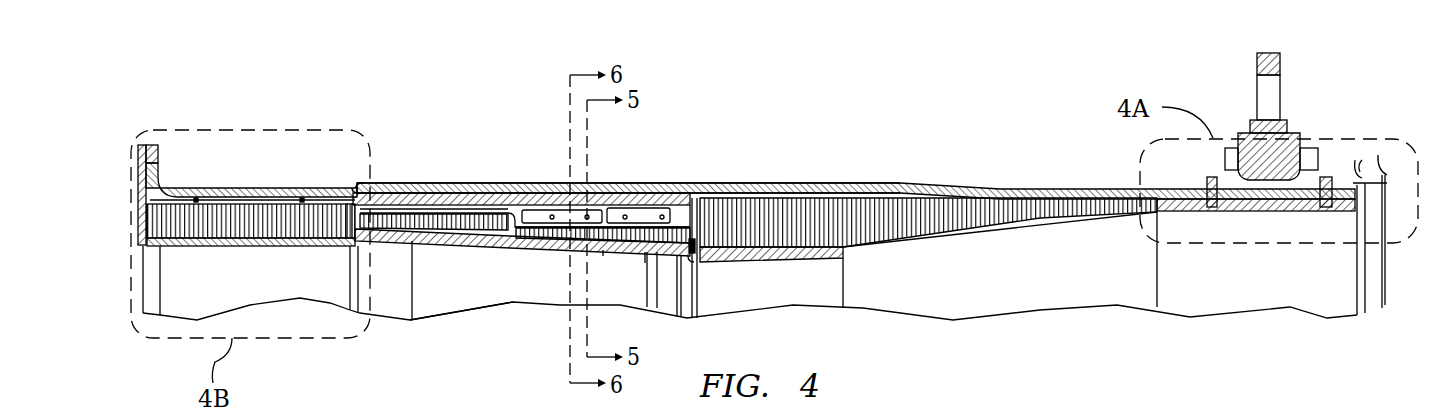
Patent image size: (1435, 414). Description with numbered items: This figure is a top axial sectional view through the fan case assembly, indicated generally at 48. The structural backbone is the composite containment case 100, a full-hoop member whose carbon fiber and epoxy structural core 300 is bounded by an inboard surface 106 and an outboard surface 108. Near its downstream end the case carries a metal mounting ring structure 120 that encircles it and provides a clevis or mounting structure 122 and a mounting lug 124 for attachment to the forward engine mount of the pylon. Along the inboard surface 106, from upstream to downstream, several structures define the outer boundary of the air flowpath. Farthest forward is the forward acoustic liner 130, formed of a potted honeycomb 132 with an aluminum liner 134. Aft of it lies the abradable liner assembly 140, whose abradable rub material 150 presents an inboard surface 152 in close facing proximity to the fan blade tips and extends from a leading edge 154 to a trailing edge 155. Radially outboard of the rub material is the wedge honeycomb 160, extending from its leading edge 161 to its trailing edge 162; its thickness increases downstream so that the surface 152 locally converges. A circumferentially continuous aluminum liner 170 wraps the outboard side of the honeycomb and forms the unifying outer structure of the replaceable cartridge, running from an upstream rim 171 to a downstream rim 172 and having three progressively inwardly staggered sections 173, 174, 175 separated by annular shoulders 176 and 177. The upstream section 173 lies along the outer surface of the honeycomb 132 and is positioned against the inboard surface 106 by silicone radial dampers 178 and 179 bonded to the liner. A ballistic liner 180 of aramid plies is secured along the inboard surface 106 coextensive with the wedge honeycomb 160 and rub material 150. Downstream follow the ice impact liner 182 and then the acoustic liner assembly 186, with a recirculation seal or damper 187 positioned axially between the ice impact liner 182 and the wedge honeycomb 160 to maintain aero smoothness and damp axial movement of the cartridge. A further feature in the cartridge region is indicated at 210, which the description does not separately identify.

The fan section 48 is at (923, 172).
The containment case 100 is at (847, 186).
The structural core 300 is at (825, 187).
The inboard surface 106 is at (412, 196).
The outboard surface 108 is at (437, 184).
The mounting ring structure 120 is at (1310, 129).
The mounting structure 122 is at (1310, 150).
The mounting lug 124 is at (1285, 120).
The forward acoustic liner 130 is at (282, 323).
The potted honeycomb 132 is at (282, 224).
The aluminum liner 134 is at (220, 253).
The abradable liner assembly 140 is at (448, 322).
The abradable rub material 150 is at (473, 243).
The inboard surface 152 is at (603, 256).
The leading edge 154 is at (350, 224).
The trailing edge 155 is at (692, 263).
The wedge honeycomb 160 is at (645, 263).
The leading edge 161 is at (352, 190).
The trailing edge 162 is at (700, 250).
The liner 170 is at (667, 227).
The upstream end 171 is at (148, 211).
The downstream end 172 is at (693, 223).
The upstream section 173 is at (250, 205).
The middle section 174 is at (483, 209).
The downstream section 175 is at (608, 210).
The annular shoulder 176 is at (367, 187).
The annular shoulder 177 is at (538, 184).
The radial damper 178 is at (196, 198).
The radial damper 179 is at (303, 199).
The ballistic liner 180 is at (653, 207).
The ice impact liner 182 is at (783, 219).
The acoustic liner assembly 186 is at (913, 222).
The recirculation seal/damper 187 is at (690, 263).
The track assembly 210 is at (562, 222).